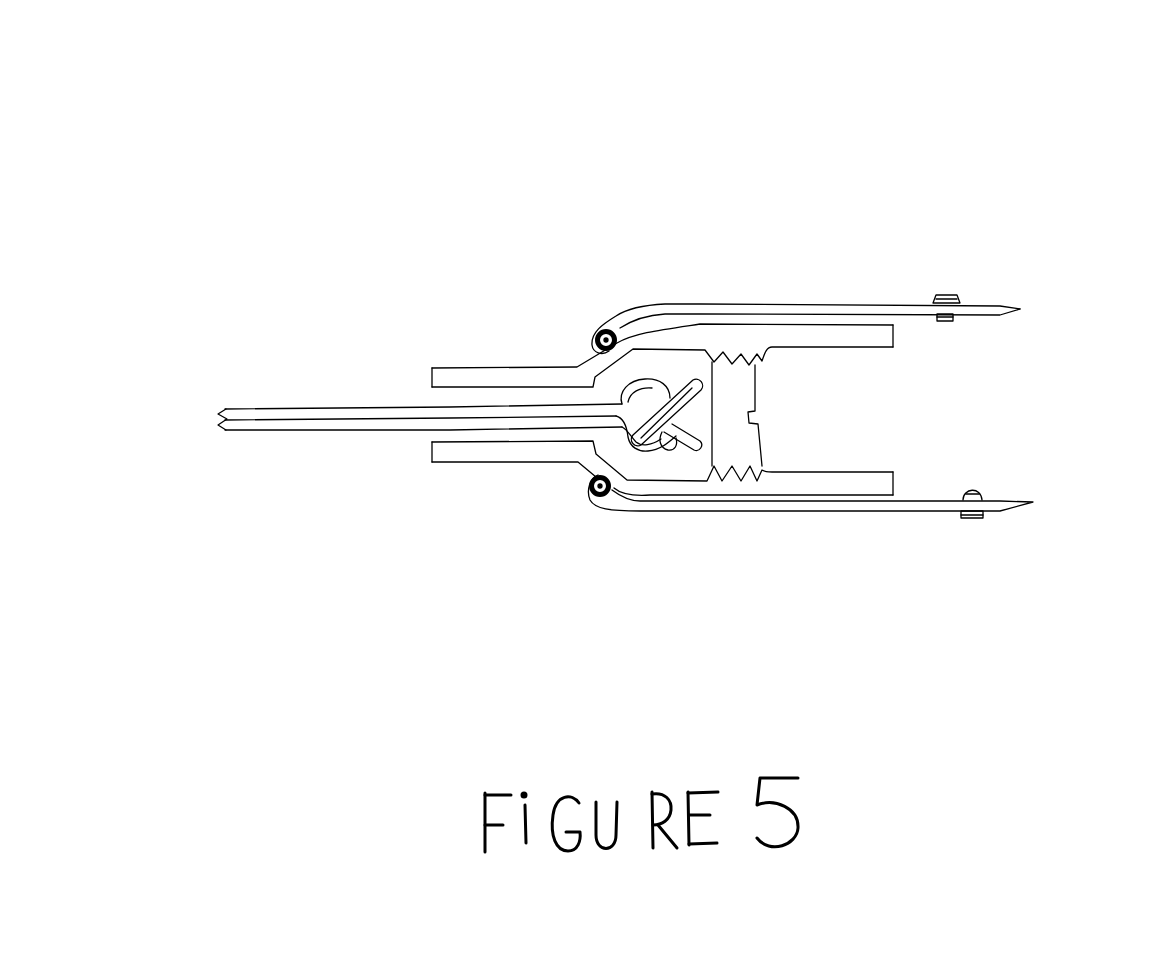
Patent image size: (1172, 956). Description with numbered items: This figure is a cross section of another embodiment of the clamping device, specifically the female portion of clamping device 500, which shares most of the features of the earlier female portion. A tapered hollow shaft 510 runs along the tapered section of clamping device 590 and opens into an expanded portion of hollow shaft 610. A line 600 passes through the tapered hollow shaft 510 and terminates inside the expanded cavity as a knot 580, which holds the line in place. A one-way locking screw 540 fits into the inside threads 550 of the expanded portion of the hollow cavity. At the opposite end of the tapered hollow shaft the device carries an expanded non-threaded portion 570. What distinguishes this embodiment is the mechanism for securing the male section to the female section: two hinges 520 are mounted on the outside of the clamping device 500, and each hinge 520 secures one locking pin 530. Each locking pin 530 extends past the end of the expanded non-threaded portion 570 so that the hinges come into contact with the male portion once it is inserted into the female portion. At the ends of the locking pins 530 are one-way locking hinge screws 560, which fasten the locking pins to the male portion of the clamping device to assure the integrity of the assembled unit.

The female portion of clamping device 500 is at (315, 162).
The tapered hollow shaft 510 is at (433, 400).
The hinge 520 is at (593, 330).
The locking pin 530 is at (664, 302).
The one-way locking screw 540 is at (733, 385).
The inside threads 550 is at (750, 362).
The one-way locking hinge screws 560 is at (955, 297).
The expanded non-threaded portion 570 is at (858, 427).
The knot 580 is at (673, 447).
The tapered section of clamping device 590 is at (537, 462).
The line 600 is at (365, 430).
The expanded portion of hollow shaft 610 is at (665, 463).